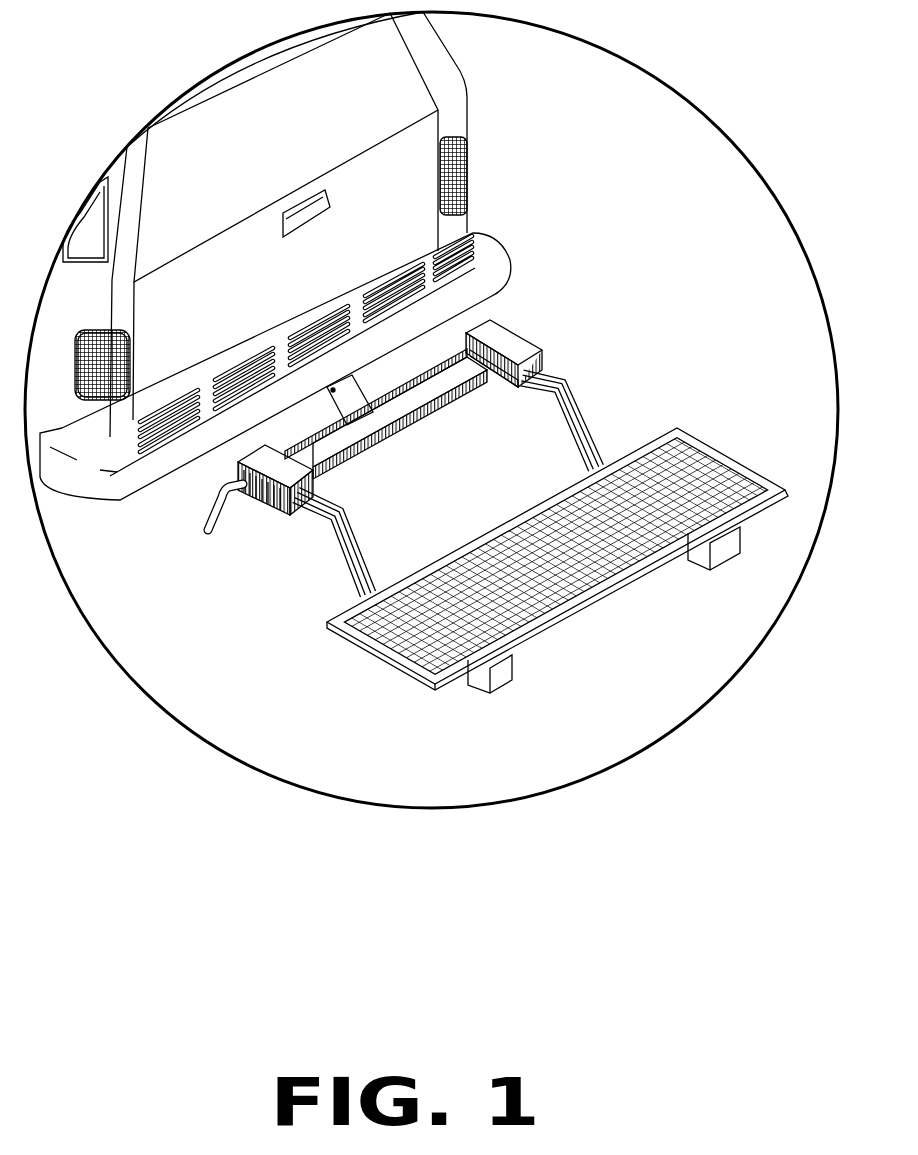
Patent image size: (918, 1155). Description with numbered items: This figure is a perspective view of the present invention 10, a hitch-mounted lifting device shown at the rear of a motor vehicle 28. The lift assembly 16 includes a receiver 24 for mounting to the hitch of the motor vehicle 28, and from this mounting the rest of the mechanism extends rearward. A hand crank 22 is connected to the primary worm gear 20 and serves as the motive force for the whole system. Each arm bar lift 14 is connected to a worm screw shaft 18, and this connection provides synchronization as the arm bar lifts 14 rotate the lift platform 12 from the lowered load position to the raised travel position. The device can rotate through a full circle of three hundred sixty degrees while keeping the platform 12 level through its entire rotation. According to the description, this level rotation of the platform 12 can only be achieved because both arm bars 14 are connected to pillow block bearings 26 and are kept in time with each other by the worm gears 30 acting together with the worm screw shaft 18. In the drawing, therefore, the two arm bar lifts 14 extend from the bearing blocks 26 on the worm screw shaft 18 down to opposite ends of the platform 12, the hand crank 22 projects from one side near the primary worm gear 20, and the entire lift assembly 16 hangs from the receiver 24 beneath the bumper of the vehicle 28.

The present invention 10 is at (640, 253).
The lift platform 12 is at (623, 590).
The arm bar lift 14 is at (605, 430).
The lift assembly 16 is at (212, 503).
The worm screw shaft 18 is at (398, 395).
The primary worm gear 20 is at (504, 374).
The hand crank 22 is at (204, 536).
The receiver 24 is at (350, 387).
The pillow block bearing 26 is at (542, 350).
The motor vehicle 28 is at (468, 226).
The worm gear 30 is at (502, 323).